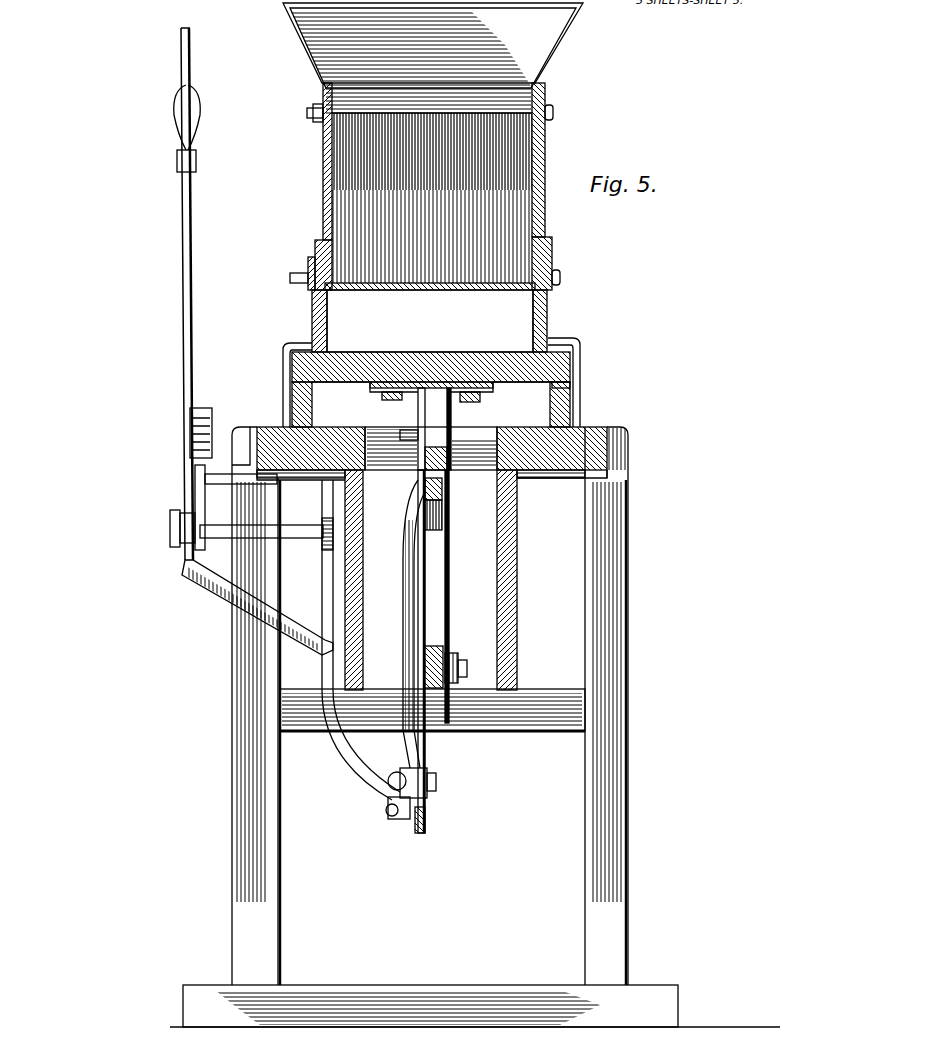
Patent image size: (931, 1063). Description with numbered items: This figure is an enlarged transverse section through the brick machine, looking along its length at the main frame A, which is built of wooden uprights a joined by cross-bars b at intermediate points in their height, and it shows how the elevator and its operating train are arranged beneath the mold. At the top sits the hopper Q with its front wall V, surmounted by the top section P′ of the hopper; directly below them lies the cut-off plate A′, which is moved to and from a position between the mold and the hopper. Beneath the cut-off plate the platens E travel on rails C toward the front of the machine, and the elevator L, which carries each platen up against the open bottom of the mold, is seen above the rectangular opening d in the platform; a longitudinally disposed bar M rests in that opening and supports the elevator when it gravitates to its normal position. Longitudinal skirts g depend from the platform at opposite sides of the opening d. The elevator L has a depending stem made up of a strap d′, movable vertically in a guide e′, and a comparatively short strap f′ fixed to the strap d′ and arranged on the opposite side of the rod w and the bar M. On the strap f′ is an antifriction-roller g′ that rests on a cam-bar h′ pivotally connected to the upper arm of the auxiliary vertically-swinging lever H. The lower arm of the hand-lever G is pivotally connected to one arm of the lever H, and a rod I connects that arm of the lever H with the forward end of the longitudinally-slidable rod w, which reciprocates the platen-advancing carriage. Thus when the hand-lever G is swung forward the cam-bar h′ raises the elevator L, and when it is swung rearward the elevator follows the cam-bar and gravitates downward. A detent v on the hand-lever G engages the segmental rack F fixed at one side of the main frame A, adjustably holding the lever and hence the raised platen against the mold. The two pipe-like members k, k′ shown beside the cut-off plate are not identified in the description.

The top section of the hopper P′ is at (520, 24).
The front wall of the hopper V is at (545, 140).
The hopper Q is at (310, 143).
The cut-off plate A′ is at (458, 290).
The platens E is at (412, 360).
The elevator L is at (441, 398).
The rails C is at (292, 405).
The pipe k is at (283, 362).
The pipe k′ is at (580, 341).
The short strap f′ is at (416, 402).
The antifriction-roller g′ is at (452, 418).
The opening d is at (392, 448).
The longitudinally-disposed bar M is at (447, 450).
The longitudinally-slidable rod w is at (442, 487).
The cam-bar h′ is at (408, 482).
The rod I is at (405, 620).
The strap d′ is at (455, 584).
The guide e′ is at (452, 652).
The auxiliary vertically-swinging lever H is at (427, 750).
The longitudinal skirts g is at (345, 590).
The main frame A is at (475, 727).
The uprights a is at (232, 675).
The cross-bars b is at (515, 728).
The segmental rack F is at (196, 483).
The hand-lever G is at (182, 290).
The detent v is at (178, 112).